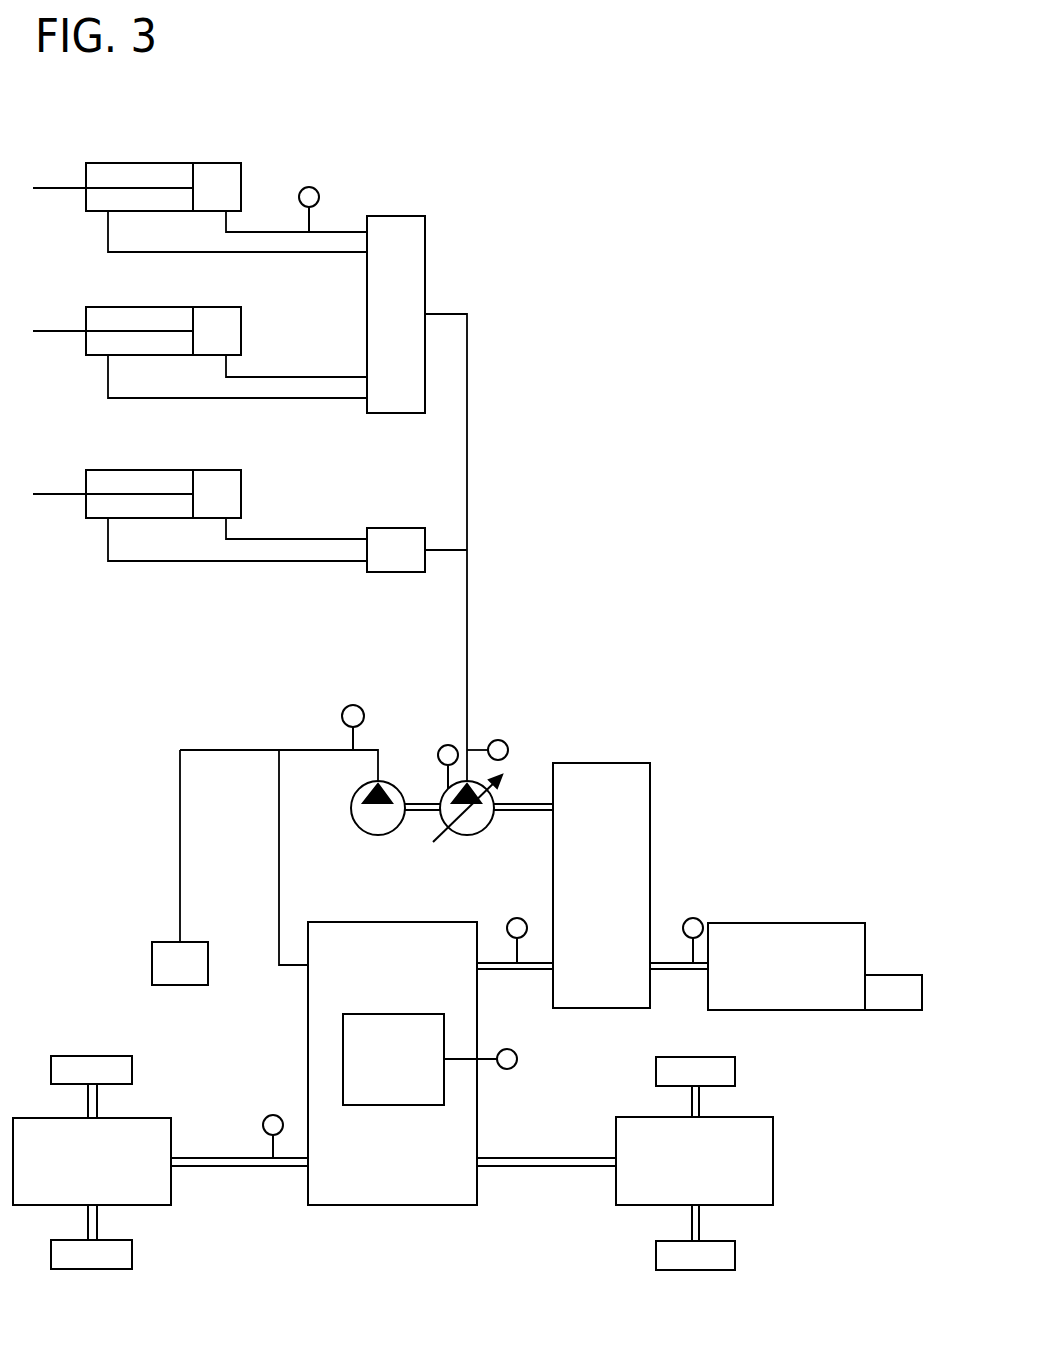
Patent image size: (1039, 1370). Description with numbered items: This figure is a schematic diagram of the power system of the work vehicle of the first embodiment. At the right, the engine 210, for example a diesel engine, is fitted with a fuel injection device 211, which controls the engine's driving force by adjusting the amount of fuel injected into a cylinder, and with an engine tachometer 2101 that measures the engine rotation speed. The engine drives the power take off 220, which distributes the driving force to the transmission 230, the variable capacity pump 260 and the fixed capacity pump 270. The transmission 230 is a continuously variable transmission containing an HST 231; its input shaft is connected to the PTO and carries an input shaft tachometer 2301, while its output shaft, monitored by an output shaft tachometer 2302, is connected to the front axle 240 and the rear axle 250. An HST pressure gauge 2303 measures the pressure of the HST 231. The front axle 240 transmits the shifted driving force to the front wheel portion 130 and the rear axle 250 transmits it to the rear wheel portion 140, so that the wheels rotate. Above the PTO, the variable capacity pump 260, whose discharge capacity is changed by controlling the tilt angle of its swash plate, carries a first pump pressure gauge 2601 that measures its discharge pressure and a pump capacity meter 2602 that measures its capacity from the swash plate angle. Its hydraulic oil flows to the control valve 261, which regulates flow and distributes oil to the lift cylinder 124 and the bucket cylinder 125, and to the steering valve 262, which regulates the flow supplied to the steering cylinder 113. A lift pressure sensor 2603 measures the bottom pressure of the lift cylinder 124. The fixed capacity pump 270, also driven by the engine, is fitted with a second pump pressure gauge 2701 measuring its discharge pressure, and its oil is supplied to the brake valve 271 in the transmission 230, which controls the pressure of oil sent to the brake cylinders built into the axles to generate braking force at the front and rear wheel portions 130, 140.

The steering cylinder 113 is at (210, 470).
The lift cylinder 124 is at (210, 163).
The bucket cylinder 125 is at (210, 307).
The front wheel portion 130 is at (133, 1068).
The rear wheel portion 140 is at (737, 1068).
The engine 210 is at (792, 923).
The fuel injection device 211 is at (892, 975).
The engine tachometer 2101 is at (712, 900).
The power take off (PTO) 220 is at (603, 763).
The transmission 230 is at (393, 1208).
The HST 231 is at (415, 1014).
The input shaft tachometer 2301 is at (517, 918).
The output shaft tachometer 2302 is at (273, 1115).
The HST pressure gauge 2303 is at (517, 1059).
The front axle 240 is at (172, 1138).
The rear axle 250 is at (775, 1158).
The variable capacity pump 260 is at (465, 835).
The first pump pressure gauge 2601 is at (522, 719).
The pump capacity meter 2602 is at (448, 745).
The lift pressure sensor 2603 is at (309, 187).
The control valve 261 is at (395, 216).
The steering valve 262 is at (395, 528).
The fixed capacity pump 270 is at (375, 835).
The second pump pressure gauge 2701 is at (352, 705).
The brake valve 271 is at (197, 942).